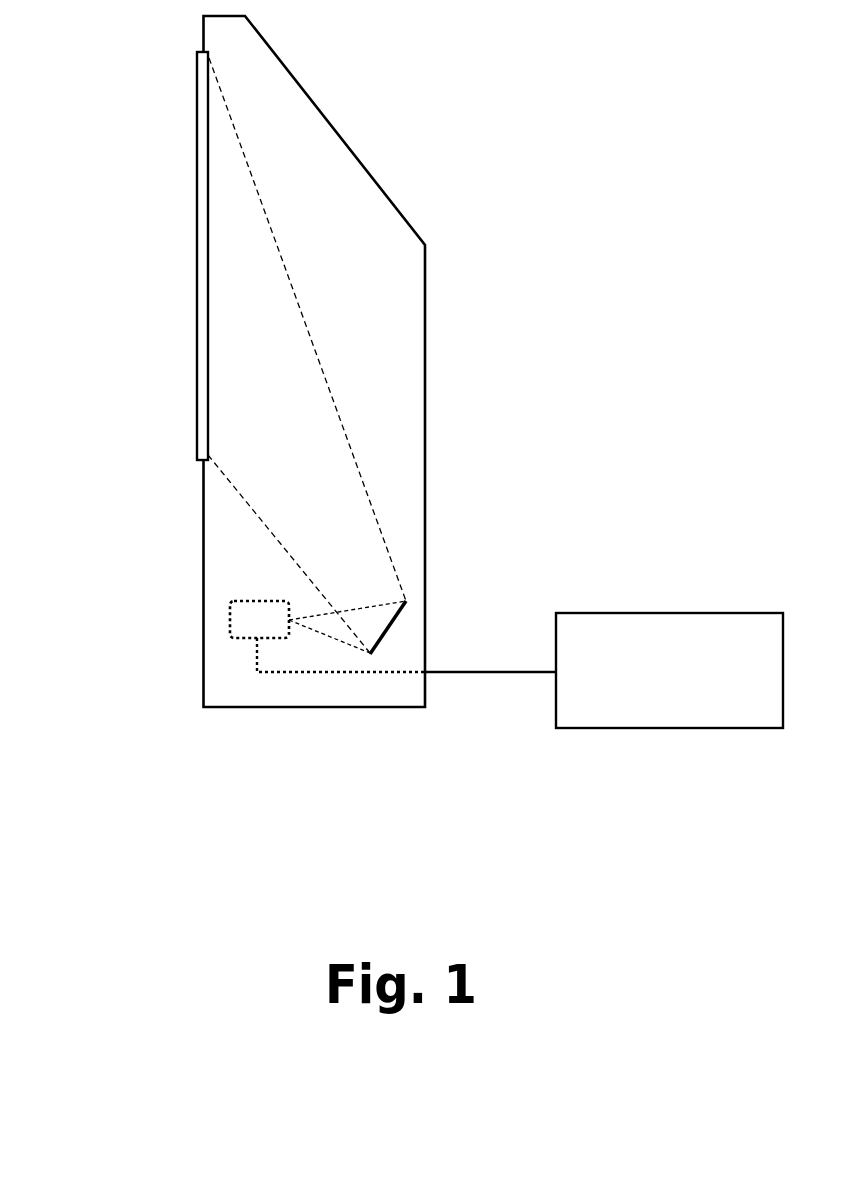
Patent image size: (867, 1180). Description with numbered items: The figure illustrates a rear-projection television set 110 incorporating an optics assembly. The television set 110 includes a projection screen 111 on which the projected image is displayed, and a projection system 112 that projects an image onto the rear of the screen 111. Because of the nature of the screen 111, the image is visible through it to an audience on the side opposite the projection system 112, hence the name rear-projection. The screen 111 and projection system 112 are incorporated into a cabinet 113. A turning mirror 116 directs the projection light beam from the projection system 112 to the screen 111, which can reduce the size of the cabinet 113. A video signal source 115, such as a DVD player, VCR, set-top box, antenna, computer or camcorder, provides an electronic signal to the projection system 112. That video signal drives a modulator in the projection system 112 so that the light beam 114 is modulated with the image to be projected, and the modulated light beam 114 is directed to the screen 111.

The rear-projection television set 110 is at (473, 210).
The projection screen 111 is at (195, 228).
The projection system 112 is at (240, 623).
The cabinet 113 is at (425, 458).
The light beam 114 is at (253, 480).
The video signal source 115 is at (520, 670).
The turning mirror 116 is at (397, 617).